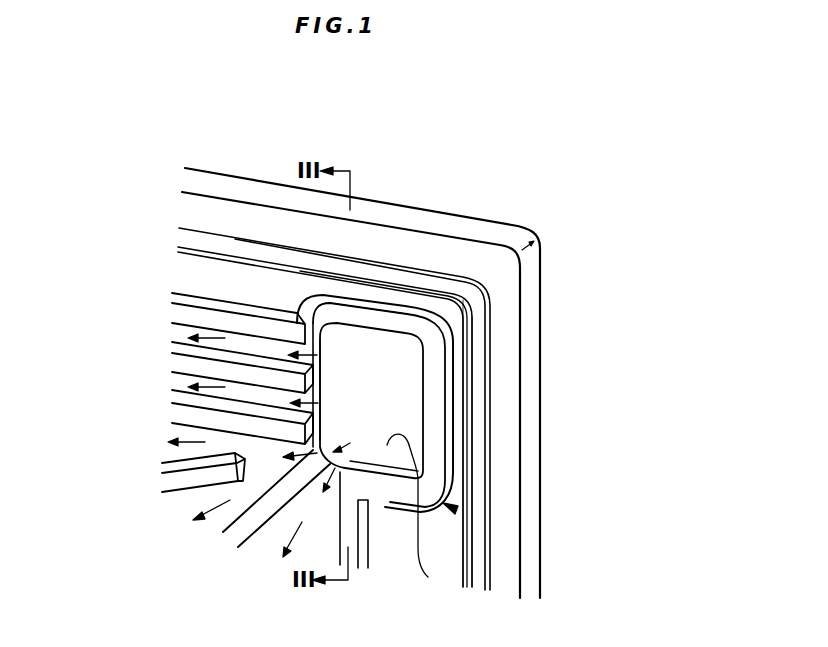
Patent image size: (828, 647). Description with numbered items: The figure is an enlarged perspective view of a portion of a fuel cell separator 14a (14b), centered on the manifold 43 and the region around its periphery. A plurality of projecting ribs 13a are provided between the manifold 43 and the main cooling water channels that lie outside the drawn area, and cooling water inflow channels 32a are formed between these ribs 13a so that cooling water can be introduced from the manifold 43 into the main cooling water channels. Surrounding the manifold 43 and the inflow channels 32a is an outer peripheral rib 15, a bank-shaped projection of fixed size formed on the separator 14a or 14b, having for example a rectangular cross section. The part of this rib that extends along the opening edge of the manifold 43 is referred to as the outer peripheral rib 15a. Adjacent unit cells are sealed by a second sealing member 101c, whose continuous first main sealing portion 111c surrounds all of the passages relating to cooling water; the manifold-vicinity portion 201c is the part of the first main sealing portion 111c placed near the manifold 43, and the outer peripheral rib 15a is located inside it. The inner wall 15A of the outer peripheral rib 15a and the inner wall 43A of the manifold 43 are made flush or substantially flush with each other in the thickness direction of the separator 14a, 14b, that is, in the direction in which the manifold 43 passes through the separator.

The second sealing member 101c is at (222, 229).
The first main sealing portion 111c is at (378, 271).
The manifold 43 is at (402, 358).
The separator 14a is at (533, 283).
The separator 14b is at (351, 395).
The manifold-vicinity portion 201c is at (478, 377).
The outer peripheral rib 15 is at (446, 506).
The outer peripheral rib 15a is at (433, 440).
The inner wall 15A is at (383, 478).
The inner wall 43A is at (421, 520).
The projecting ribs 13a is at (187, 367).
The cooling water inflow channels 32a is at (168, 387).